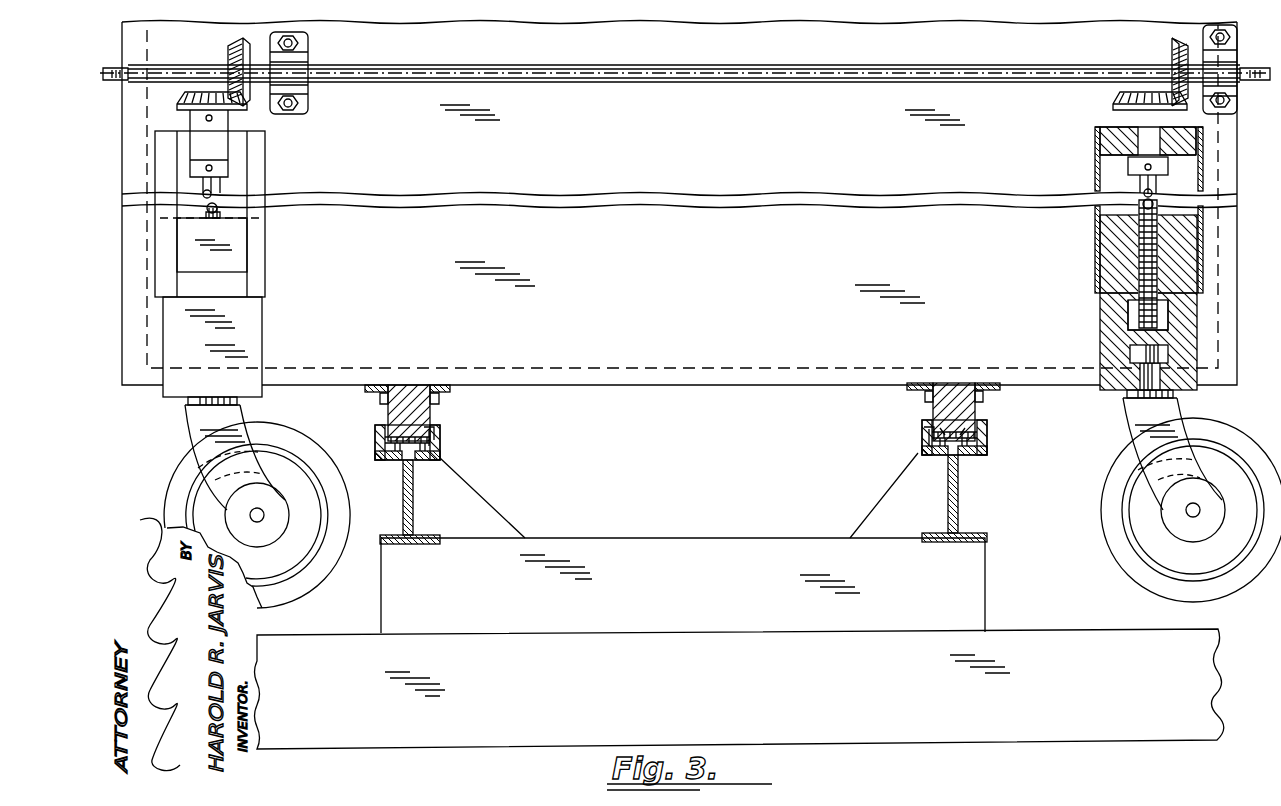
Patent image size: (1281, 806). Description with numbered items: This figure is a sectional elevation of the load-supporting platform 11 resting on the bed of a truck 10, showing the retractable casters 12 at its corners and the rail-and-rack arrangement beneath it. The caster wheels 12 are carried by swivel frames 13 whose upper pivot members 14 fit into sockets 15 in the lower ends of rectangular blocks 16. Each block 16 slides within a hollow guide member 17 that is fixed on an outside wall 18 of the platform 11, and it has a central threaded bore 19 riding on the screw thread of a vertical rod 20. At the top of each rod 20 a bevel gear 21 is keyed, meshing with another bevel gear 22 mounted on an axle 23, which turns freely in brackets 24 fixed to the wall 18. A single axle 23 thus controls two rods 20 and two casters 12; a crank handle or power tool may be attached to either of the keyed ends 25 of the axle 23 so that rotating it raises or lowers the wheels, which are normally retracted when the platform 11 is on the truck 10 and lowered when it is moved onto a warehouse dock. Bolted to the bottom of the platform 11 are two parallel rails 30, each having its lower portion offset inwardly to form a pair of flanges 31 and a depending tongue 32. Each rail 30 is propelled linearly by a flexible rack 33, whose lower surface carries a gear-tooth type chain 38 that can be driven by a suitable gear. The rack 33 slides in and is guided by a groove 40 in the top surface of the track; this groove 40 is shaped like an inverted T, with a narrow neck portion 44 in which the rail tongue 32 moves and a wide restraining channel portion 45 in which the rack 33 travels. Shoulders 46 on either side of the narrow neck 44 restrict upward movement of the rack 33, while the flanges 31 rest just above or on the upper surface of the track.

The truck 10 is at (722, 685).
The load-supporting platform 11 is at (712, 388).
The retractable caster 12 is at (300, 588).
The swivel frame 13 is at (200, 425).
The upper pivot member 14 is at (188, 400).
The socket 15 is at (1135, 381).
The rectangular block 16 is at (255, 339).
The hollow guide member 17 is at (270, 251).
The outside wall 18 is at (600, 252).
The central threaded bore 19 is at (1140, 291).
The vertical rod 20 is at (216, 213).
The bevel gear 21 is at (178, 98).
The bevel gear 22 is at (228, 46).
The axle 23 is at (975, 53).
The bracket 24 is at (300, 61).
The keyed end 25 is at (113, 70).
The rail 30 is at (410, 385).
The flange 31 is at (393, 419).
The depending tongue 32 is at (434, 433).
The flexible rack 33 is at (384, 444).
The gear-tooth type chain 38 is at (422, 461).
The groove 40 is at (383, 431).
The narrow neck portion 44 is at (925, 441).
The wide restraining channel portion 45 is at (400, 461).
The shoulder 46 is at (437, 439).